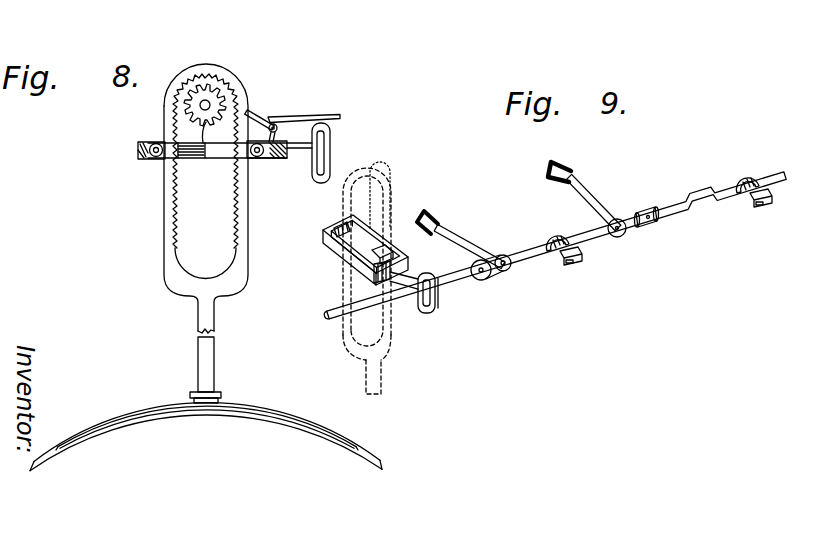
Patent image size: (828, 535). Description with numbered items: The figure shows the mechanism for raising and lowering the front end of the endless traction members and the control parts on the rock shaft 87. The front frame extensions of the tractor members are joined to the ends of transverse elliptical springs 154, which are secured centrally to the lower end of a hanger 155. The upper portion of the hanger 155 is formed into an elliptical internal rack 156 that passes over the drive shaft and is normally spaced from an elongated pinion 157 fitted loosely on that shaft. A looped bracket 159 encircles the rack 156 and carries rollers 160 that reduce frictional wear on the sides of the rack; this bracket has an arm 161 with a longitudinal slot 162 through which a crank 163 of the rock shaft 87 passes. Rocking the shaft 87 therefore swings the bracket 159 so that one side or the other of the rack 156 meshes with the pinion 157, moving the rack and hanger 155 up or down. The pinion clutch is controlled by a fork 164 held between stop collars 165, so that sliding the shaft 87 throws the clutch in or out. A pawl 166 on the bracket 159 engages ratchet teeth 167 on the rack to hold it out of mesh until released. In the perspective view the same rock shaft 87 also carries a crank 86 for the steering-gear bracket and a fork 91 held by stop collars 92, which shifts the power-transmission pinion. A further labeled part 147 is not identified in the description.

In FIG. 8, the elliptical springs 154 is at (273, 417).
In FIG. 8, the hanger 155 is at (208, 362).
In FIG. 9, the hanger 155 is at (383, 383).
In FIG. 8, the elliptical internal rack 156 is at (256, 207).
In FIG. 9, the elliptical internal rack 156 is at (338, 283).
In FIG. 8, the elongated pinion 157 is at (214, 103).
In FIG. 8, the looped bracket 159 is at (138, 150).
In FIG. 9, the looped bracket 159 is at (368, 217).
In FIG. 8, the rollers 160 is at (153, 160).
In FIG. 9, the rollers 160 is at (389, 242).
In FIG. 8, the arm 161 is at (327, 144).
In FIG. 9, the arm 161 is at (420, 270).
In FIG. 8, the longitudinal slot 162 is at (327, 166).
In FIG. 9, the crank 163 is at (421, 318).
In FIG. 9, the fork 164 is at (466, 248).
In FIG. 9, the stop collars 165 is at (508, 278).
In FIG. 8, the pawl 166 is at (278, 118).
In FIG. 8, the ratchet teeth 167 is at (250, 114).
In FIG. 8, the shaft section 147 is at (198, 163).
In FIG. 9, the crank 86 is at (696, 191).
In FIG. 9, the rock shaft 87 is at (784, 183).
In FIG. 9, the fork 91 is at (604, 195).
In FIG. 9, the stop collars 92 is at (653, 228).